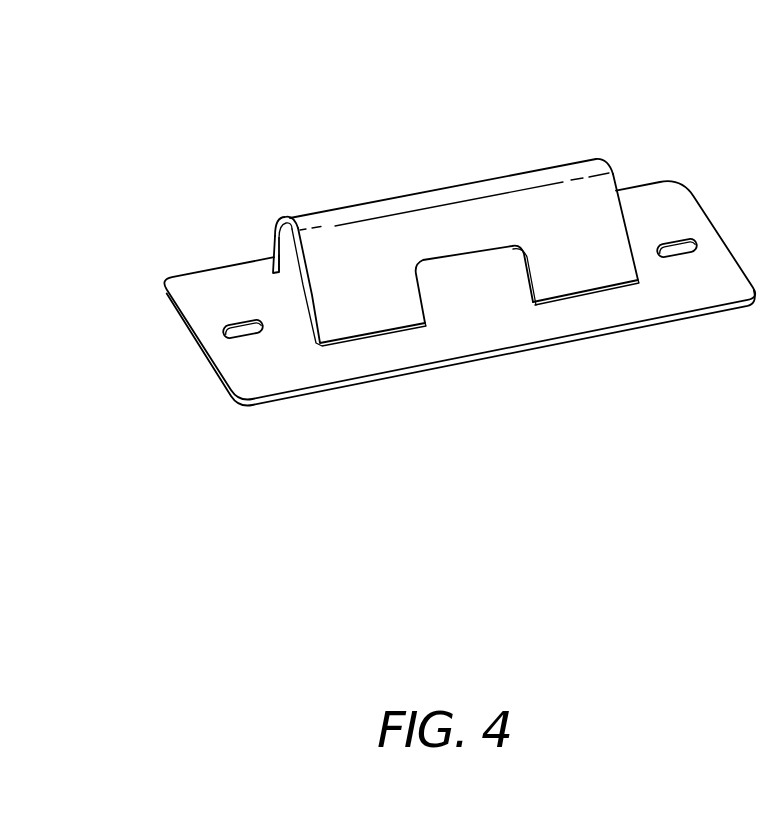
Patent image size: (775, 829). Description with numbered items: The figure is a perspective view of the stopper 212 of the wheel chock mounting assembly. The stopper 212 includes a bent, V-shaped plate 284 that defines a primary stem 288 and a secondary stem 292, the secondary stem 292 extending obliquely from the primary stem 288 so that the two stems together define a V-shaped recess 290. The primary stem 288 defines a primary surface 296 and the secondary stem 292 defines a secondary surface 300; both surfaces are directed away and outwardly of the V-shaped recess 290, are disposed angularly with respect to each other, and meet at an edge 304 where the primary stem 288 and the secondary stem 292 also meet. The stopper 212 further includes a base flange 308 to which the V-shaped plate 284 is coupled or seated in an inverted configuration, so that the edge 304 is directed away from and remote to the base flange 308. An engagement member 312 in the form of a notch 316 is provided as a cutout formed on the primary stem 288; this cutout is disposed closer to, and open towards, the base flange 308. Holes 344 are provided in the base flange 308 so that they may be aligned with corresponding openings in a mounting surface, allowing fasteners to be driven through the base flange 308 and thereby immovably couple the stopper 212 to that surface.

The stopper 212 is at (105, 70).
The V-shaped plate 284 is at (598, 225).
The primary stem 288 is at (318, 316).
The V-shaped recess 290 is at (280, 262).
The secondary stem 292 is at (275, 244).
The primary surface 296 is at (397, 303).
The secondary surface 300 is at (276, 239).
The edge 304 is at (513, 168).
The base flange 308 is at (213, 373).
The engagement member 312 is at (518, 292).
The notch 316 is at (467, 258).
The holes 344 is at (240, 320).